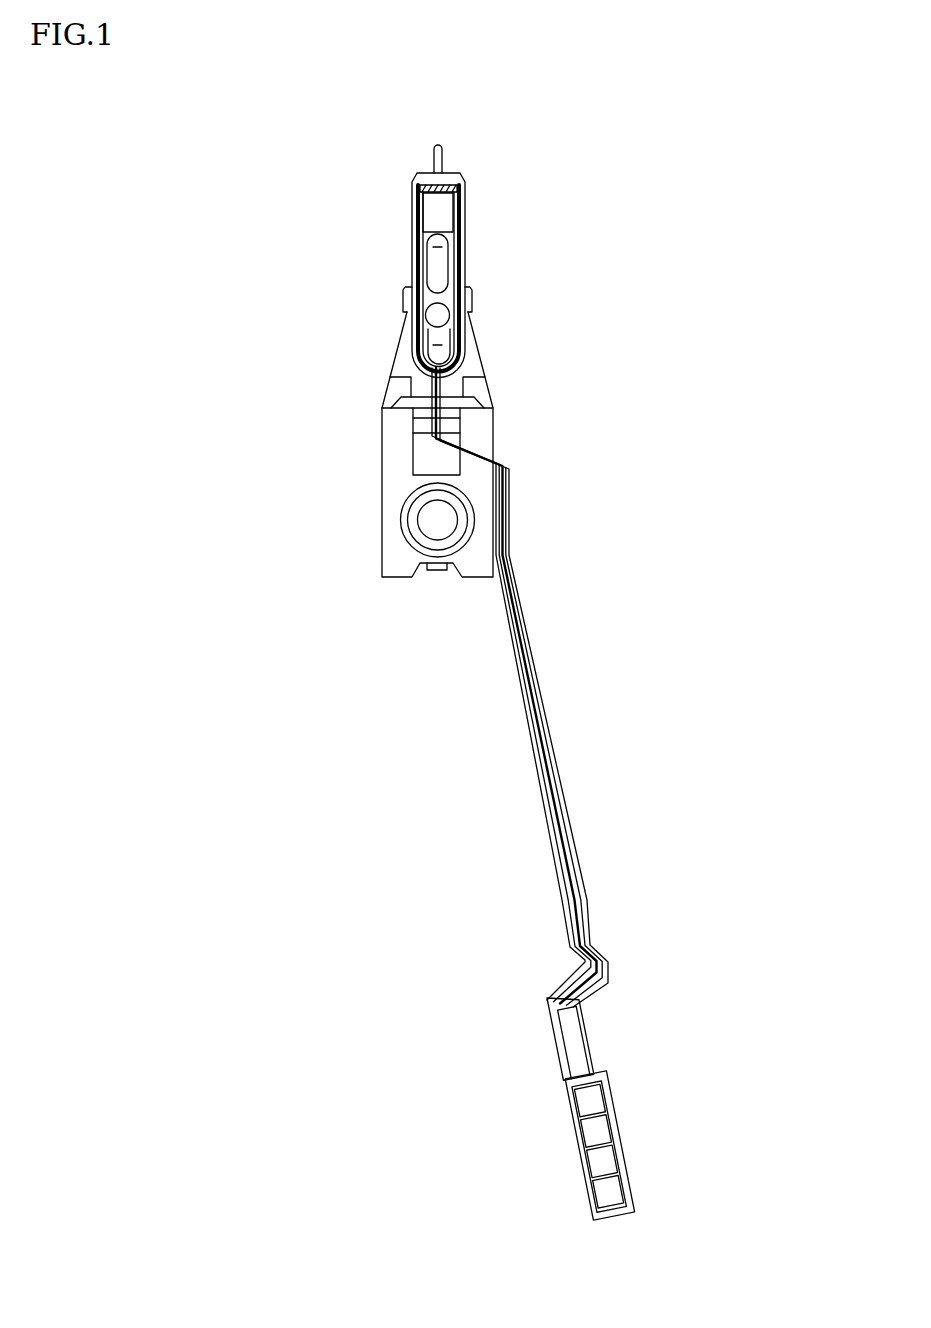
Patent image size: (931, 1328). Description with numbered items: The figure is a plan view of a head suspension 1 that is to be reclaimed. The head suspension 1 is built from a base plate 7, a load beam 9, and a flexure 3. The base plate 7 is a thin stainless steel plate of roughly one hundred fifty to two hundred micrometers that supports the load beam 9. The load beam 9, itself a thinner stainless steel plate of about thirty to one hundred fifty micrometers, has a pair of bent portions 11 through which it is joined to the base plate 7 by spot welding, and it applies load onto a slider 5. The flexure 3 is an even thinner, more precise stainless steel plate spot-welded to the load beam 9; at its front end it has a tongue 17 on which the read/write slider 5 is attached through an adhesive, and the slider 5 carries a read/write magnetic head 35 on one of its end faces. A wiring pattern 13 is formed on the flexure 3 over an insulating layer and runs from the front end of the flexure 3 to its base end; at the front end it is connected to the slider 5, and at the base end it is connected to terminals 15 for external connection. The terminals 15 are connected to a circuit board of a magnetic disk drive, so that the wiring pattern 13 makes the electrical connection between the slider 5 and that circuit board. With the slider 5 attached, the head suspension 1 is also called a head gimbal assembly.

The head suspension 1 is at (621, 187).
The flexure 3 is at (450, 270).
The slider 5 is at (442, 210).
The base plate 7 is at (400, 487).
The load beam 9 is at (410, 350).
The bent portions 11 is at (397, 387).
The wiring pattern 13 is at (412, 292).
The terminals 15 is at (588, 1100).
The tongue 17 is at (418, 204).
The magnetic head 35 is at (440, 188).